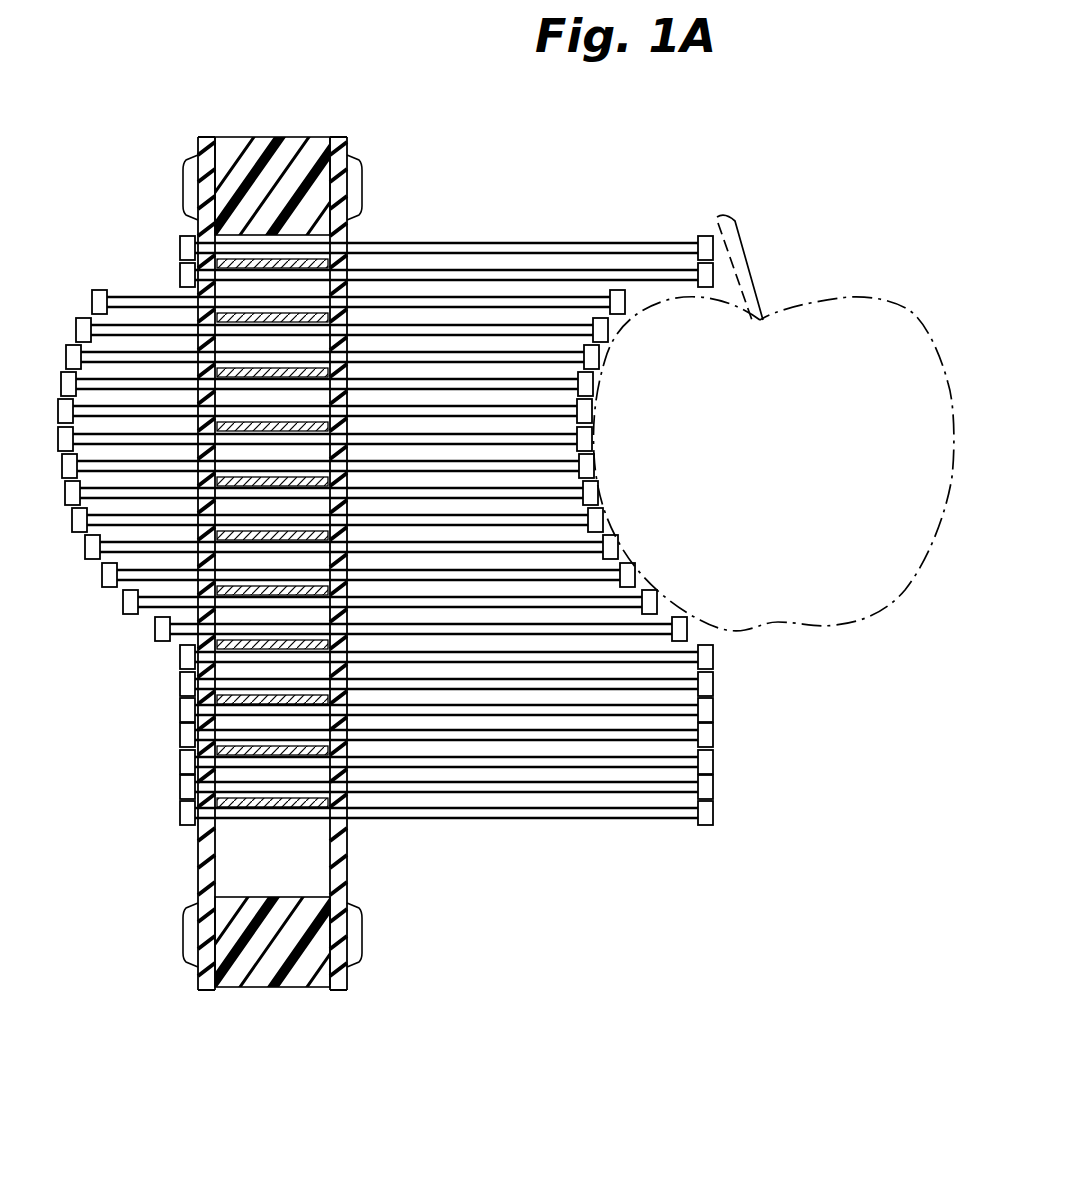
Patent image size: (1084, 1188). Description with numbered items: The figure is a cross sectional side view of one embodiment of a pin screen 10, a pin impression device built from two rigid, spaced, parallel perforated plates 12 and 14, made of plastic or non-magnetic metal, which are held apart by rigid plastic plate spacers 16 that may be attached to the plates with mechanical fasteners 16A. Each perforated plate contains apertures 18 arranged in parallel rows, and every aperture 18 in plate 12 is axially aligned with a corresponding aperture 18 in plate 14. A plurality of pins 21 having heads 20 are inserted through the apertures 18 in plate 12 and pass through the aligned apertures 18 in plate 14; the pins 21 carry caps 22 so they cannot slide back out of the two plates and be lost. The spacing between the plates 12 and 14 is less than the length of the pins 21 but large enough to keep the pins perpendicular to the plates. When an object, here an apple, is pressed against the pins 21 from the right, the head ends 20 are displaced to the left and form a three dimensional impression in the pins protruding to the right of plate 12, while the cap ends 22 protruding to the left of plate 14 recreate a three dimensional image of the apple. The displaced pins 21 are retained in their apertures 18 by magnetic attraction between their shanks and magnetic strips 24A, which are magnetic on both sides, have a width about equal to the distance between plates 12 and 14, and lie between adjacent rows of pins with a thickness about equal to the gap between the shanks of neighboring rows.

The pin screen 10 is at (757, 173).
The perforated plate 12 is at (347, 230).
The perforated plate 14 is at (182, 142).
The plate spacer 16 is at (262, 137).
The mechanical fastener 16A is at (362, 175).
The aperture 18 is at (197, 868).
The pin head 20 is at (713, 817).
The pin 21 is at (557, 820).
The cap 22 is at (156, 637).
The magnetic strip 24A is at (178, 262).